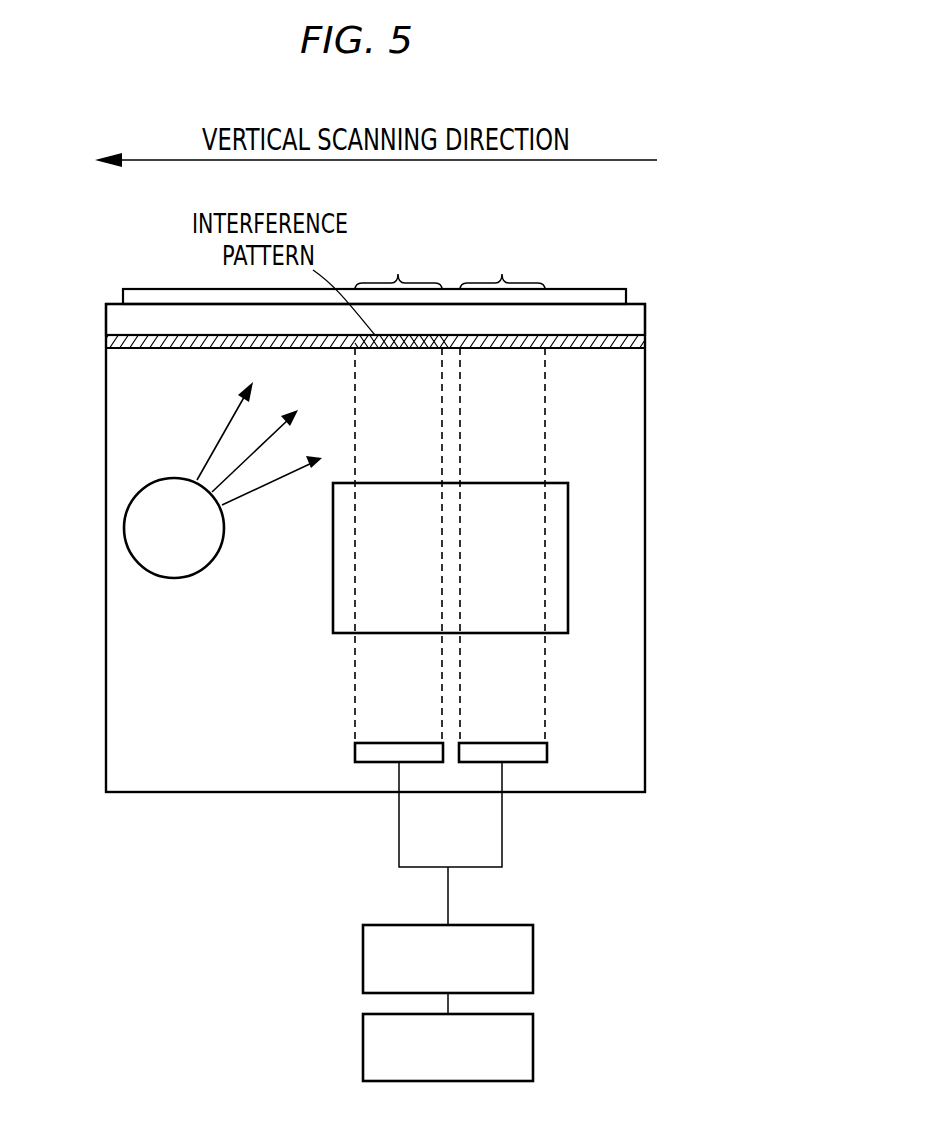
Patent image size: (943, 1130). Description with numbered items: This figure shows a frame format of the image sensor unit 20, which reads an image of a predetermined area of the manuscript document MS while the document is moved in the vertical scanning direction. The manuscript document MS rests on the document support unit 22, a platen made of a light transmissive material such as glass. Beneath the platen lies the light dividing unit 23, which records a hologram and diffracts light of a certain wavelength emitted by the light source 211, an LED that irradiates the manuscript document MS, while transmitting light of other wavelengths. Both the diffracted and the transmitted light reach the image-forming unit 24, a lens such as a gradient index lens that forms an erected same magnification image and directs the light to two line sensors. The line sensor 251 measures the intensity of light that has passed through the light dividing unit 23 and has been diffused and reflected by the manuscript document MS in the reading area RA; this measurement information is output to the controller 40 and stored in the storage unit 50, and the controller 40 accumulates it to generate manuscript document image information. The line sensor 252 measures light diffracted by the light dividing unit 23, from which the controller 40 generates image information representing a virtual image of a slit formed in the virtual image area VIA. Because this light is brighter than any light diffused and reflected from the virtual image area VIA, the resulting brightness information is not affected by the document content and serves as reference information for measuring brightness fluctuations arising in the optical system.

The image sensor unit 20 is at (108, 660).
The document support unit 22 is at (115, 322).
The light dividing unit 23 is at (110, 338).
The image-forming unit 24 is at (555, 522).
The light source 211 is at (135, 522).
The line sensor 251 is at (530, 752).
The line sensor 252 is at (375, 752).
The controller 40 is at (533, 957).
The storage unit 50 is at (533, 1052).
The manuscript document MS is at (130, 287).
The virtual image area VIA is at (398, 491).
The reading area RA is at (502, 491).